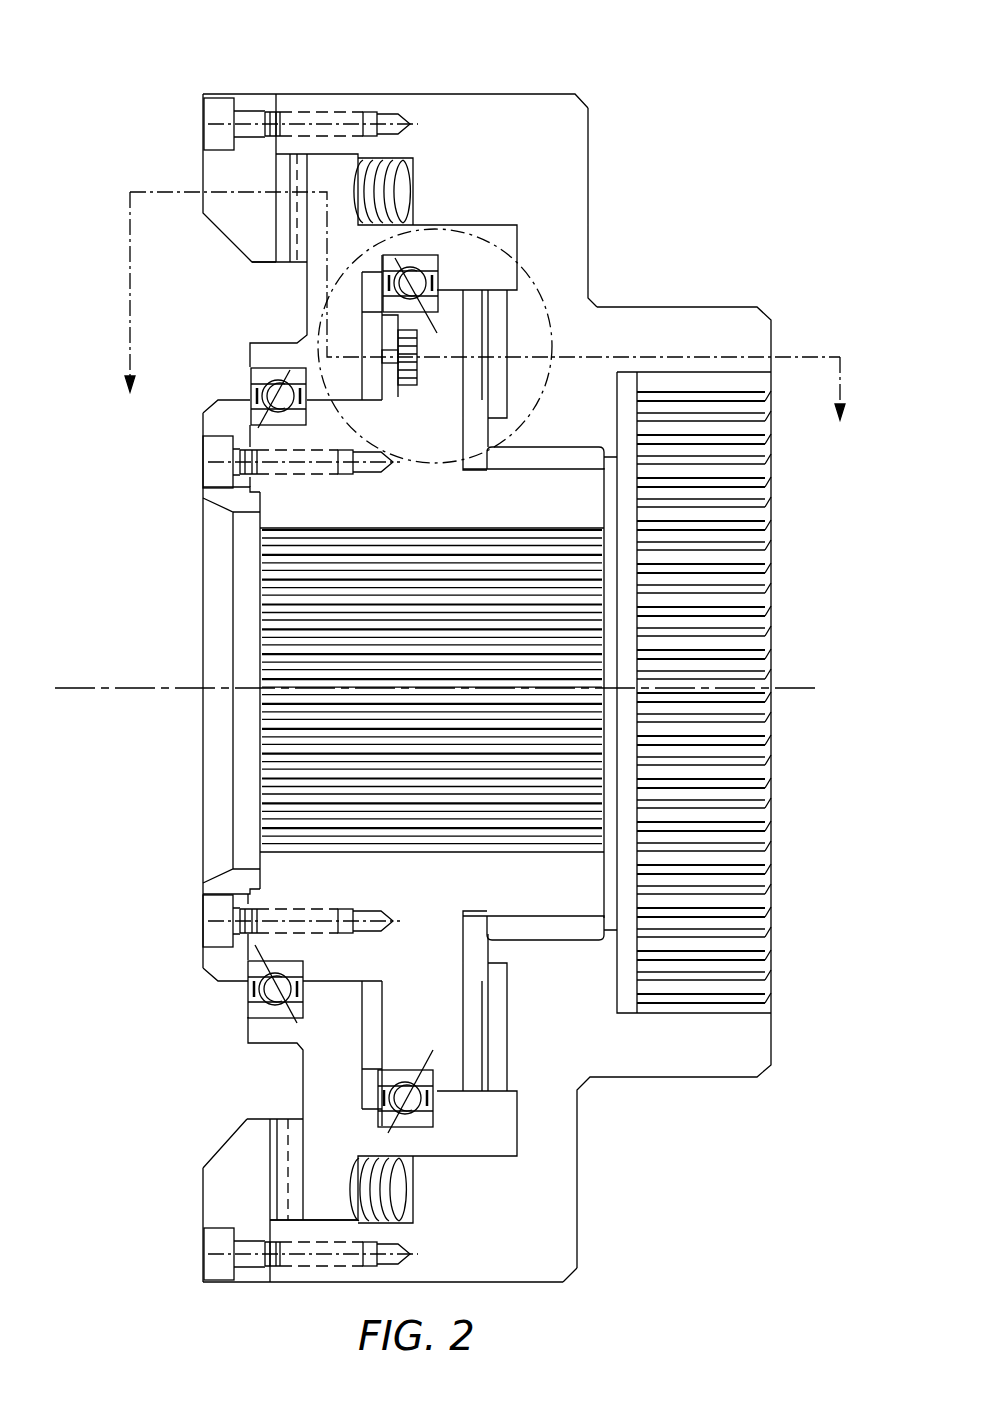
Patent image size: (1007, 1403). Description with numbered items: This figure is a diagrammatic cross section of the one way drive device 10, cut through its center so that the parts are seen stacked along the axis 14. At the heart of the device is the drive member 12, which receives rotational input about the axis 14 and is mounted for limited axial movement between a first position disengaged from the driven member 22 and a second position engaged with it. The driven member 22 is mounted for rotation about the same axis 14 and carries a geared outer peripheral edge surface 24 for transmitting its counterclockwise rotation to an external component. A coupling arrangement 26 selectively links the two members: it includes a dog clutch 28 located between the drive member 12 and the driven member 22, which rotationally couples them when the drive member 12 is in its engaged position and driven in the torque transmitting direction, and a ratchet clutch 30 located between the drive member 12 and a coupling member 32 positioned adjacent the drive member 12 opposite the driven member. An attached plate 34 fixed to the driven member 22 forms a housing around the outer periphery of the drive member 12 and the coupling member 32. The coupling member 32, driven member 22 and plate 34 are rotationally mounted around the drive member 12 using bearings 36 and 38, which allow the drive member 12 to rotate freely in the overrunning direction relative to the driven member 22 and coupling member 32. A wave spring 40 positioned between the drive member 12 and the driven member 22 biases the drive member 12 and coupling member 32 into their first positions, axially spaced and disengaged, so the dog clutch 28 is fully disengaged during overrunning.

The one way drive device 10 is at (142, 120).
The drive member 12 is at (328, 863).
The axis 14 is at (150, 688).
The driven member 22 is at (555, 131).
The geared outer peripheral edge surface 24 is at (731, 1047).
The coupling arrangement 26 is at (437, 333).
The dog clutch 28 is at (500, 397).
The ratchet clutch 30 is at (590, 252).
The coupling member 32 is at (330, 1178).
The attached plate 34 is at (252, 1170).
The bearing 36 is at (290, 368).
The bearing 38 is at (548, 930).
The wave spring 40 is at (413, 176).